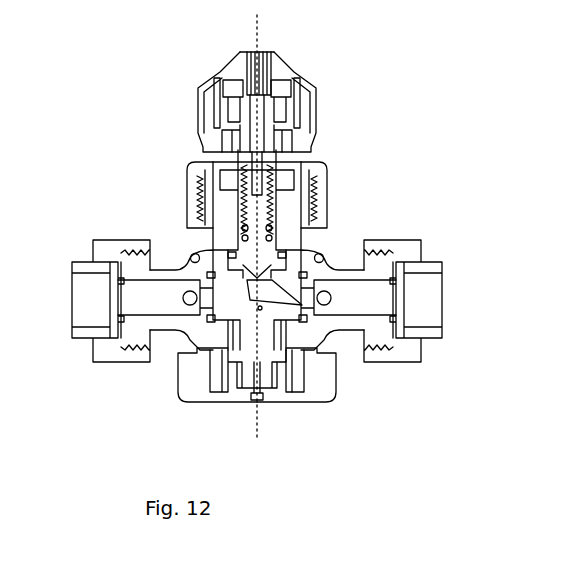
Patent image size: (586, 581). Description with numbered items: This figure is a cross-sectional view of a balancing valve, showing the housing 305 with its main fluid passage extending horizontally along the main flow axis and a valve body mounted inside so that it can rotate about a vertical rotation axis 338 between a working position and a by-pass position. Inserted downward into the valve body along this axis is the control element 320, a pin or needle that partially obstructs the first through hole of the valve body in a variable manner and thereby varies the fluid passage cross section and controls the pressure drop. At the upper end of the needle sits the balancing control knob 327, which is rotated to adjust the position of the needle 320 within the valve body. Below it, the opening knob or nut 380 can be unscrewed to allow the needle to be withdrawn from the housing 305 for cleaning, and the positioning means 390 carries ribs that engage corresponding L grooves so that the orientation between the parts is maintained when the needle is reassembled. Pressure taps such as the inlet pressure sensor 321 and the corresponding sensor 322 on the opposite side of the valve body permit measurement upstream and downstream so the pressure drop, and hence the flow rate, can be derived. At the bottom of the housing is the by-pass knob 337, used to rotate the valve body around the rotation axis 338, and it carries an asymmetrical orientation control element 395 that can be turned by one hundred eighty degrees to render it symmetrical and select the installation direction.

The rotation axis 338 is at (253, 20).
The balancing control knob 327 is at (317, 88).
The opening knob or nut 380 is at (185, 185).
The positioning means 390 is at (322, 190).
The housing 305 is at (312, 255).
The control element 320 is at (208, 252).
The inlet pressure sensor 321 is at (186, 303).
The second check ball 322 is at (330, 304).
The by-pass knob 337 is at (203, 387).
The asymmetrical orientation control element 395 is at (290, 330).